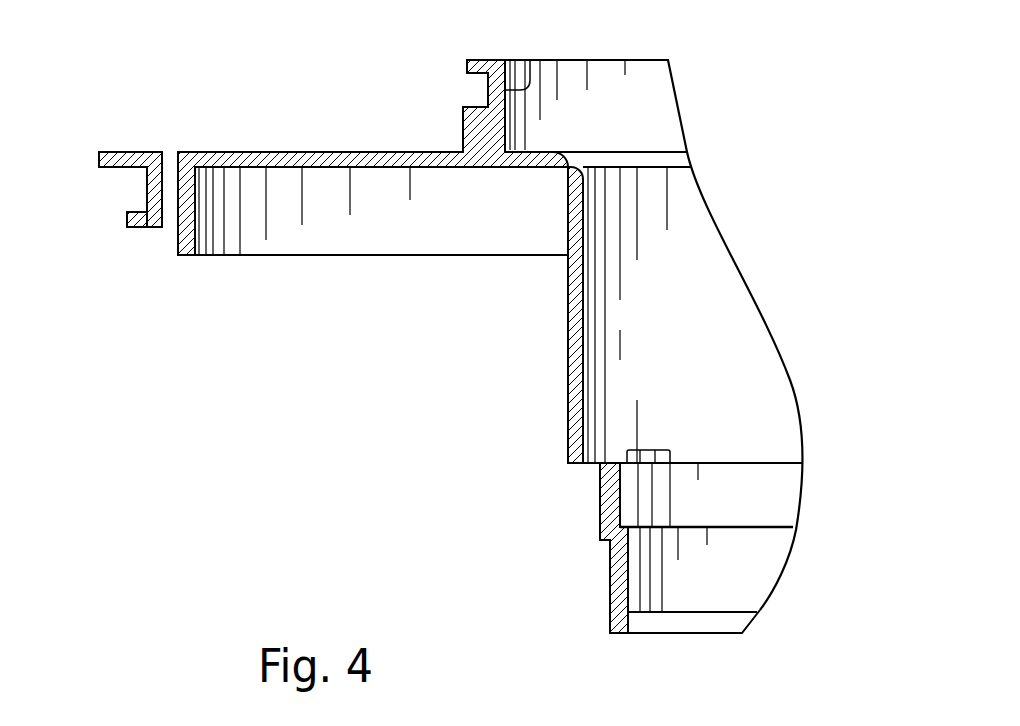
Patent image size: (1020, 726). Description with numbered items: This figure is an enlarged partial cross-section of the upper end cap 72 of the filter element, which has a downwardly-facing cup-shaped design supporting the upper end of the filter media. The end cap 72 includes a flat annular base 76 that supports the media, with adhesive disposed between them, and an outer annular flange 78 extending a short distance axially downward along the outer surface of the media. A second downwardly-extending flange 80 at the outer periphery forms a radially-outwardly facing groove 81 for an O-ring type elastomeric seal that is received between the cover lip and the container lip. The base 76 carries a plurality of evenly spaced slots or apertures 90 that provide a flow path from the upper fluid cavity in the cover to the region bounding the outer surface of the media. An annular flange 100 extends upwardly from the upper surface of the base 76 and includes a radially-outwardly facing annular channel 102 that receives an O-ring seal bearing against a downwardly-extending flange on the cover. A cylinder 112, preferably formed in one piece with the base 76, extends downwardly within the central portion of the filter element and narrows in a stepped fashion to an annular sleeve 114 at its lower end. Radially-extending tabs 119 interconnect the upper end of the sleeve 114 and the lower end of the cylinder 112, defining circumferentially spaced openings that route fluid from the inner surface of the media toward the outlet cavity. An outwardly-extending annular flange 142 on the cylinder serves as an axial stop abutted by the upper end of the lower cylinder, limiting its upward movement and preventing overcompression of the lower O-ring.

The upper end cap 72 is at (102, 152).
The flat annular base 76 is at (298, 152).
The outer annular flange 78 is at (286, 232).
The second downwardly-extending flange 80 is at (140, 193).
The radially-outwardly facing groove 81 is at (146, 180).
The slots or apertures 90 is at (164, 153).
The annular flange 100 is at (530, 58).
The radially-outwardly facing annular channel 102 is at (488, 90).
The cylinder 112 is at (567, 357).
The annular sleeve 114 is at (610, 600).
The radially-extending tabs 119 is at (645, 450).
The outwardly-extending annular flange 142 is at (600, 545).